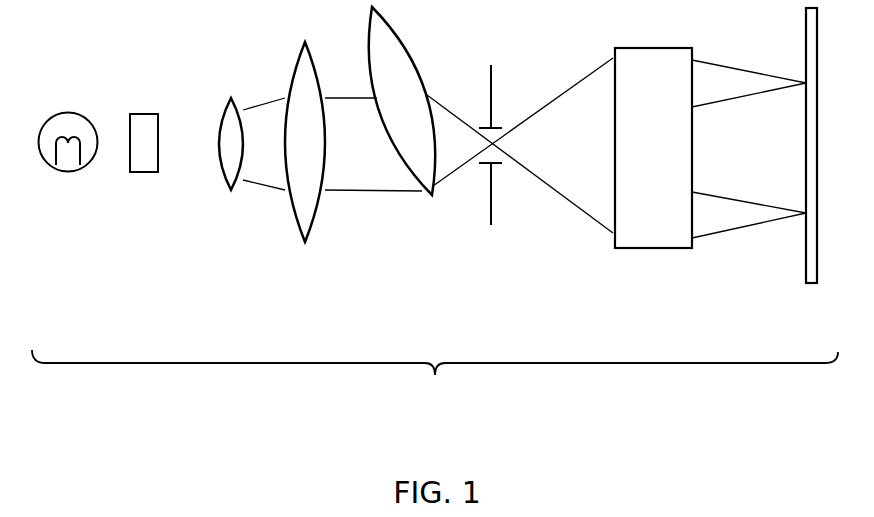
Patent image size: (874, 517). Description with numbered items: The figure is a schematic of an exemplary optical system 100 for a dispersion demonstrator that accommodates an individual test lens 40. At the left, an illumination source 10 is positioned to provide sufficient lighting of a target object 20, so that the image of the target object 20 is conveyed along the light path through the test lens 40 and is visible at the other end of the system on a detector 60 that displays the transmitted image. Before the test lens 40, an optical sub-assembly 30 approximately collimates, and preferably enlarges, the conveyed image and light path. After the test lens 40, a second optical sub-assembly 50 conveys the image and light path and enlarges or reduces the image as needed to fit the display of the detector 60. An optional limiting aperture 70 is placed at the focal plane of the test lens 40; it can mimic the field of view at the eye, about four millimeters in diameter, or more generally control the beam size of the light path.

The illumination source 10 is at (68, 161).
The target object 20 is at (145, 161).
The optical sub-assembly 30 is at (215, 252).
The test lens 40 is at (450, 290).
The optical sub-assembly 50 is at (653, 167).
The detector 60 is at (809, 164).
The limiting aperture 70 is at (490, 164).
The optical system 100 is at (435, 381).